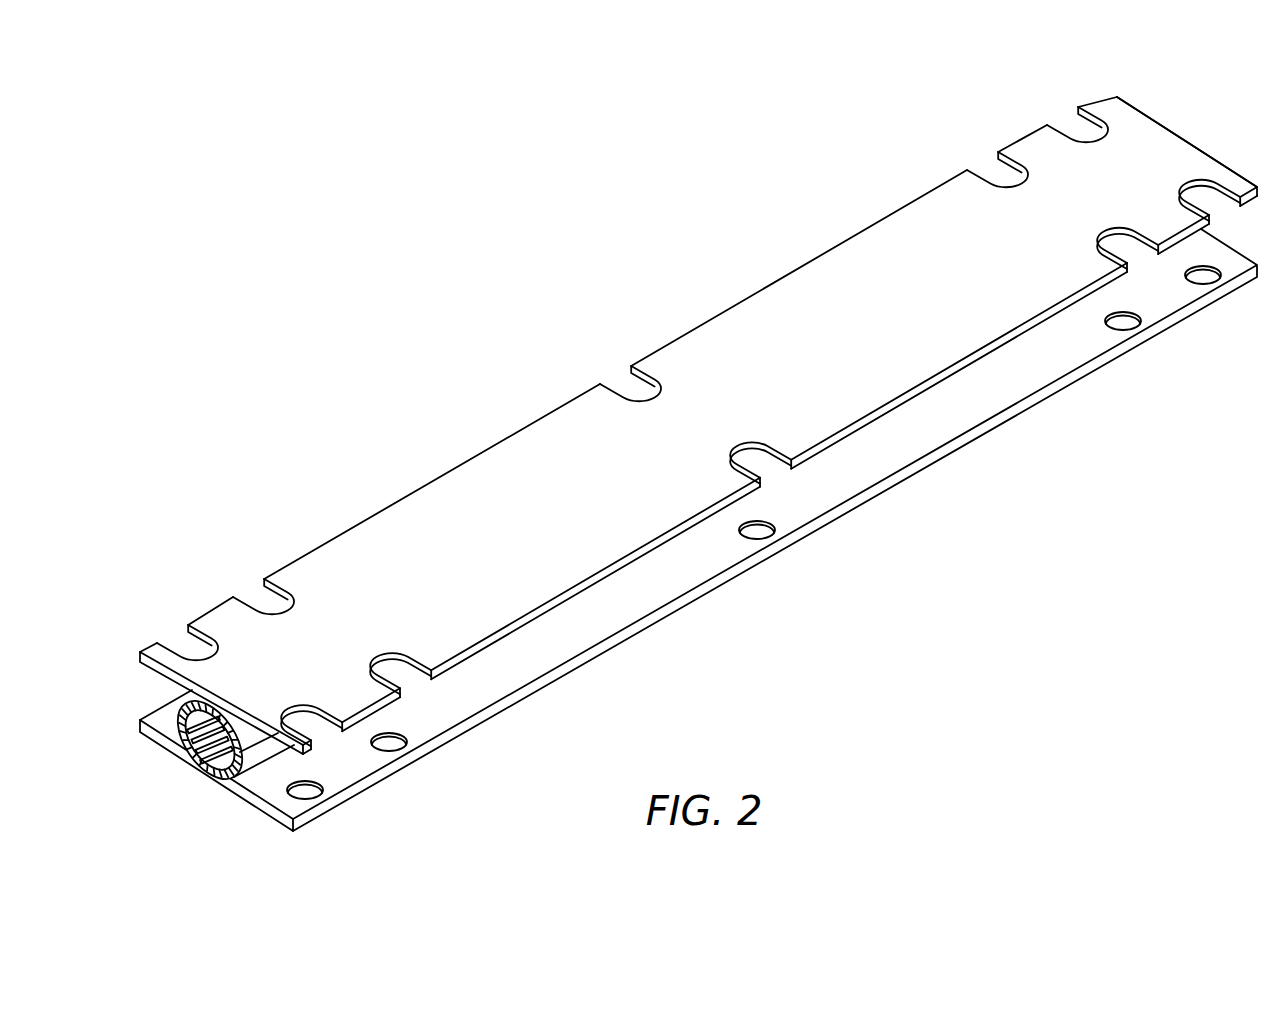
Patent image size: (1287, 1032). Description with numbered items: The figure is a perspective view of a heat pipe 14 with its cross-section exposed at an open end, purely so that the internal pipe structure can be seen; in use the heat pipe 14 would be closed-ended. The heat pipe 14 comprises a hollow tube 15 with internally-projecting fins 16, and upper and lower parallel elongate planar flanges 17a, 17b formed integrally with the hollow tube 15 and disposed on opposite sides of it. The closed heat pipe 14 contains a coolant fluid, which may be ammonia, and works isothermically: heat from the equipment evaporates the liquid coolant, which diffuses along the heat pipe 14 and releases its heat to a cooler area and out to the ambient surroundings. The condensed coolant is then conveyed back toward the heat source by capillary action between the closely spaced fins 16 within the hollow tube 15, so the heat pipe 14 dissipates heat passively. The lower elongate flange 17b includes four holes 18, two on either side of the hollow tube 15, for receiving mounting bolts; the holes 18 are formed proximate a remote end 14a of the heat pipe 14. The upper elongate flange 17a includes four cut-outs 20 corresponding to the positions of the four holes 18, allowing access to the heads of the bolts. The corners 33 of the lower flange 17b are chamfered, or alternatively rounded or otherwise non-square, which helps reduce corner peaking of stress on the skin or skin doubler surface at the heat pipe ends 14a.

The heat pipe 14 is at (565, 320).
The remote end of the heat pipe 14a is at (1187, 138).
The hollow tube 15 is at (257, 753).
The internally-projecting fins 16 is at (211, 779).
The upper elongate flange 17a is at (468, 470).
The lower elongate flange 17b is at (672, 598).
The holes 18 is at (1207, 281).
The cut-outs 20 is at (216, 645).
The corners of the lower flange 33 is at (138, 728).